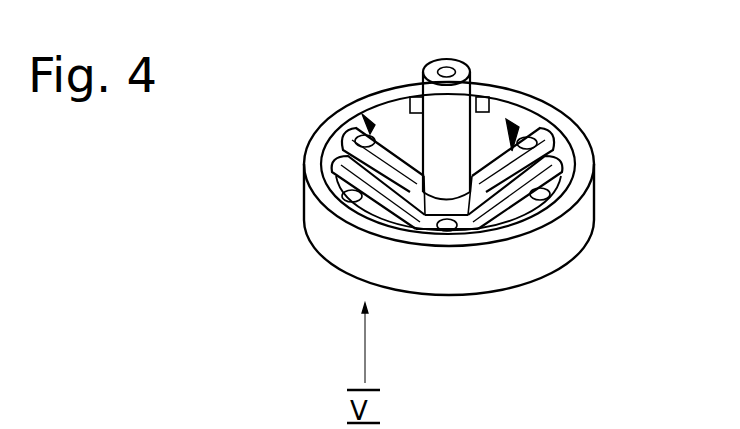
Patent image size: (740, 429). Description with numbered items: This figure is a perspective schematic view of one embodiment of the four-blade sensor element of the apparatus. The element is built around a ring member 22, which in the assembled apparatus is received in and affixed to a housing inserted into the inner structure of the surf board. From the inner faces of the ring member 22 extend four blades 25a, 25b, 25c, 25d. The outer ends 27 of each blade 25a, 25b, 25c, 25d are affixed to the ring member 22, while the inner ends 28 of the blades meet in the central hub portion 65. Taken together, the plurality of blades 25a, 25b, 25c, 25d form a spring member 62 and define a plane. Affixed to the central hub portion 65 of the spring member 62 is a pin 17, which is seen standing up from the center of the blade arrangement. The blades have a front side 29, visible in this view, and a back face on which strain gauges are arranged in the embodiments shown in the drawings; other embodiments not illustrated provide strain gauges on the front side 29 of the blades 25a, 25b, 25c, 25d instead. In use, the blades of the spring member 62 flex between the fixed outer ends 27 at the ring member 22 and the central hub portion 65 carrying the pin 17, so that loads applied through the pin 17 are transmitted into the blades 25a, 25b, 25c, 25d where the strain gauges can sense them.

The pin 17 is at (412, 62).
The ring member 22 is at (577, 217).
The blade 25a is at (390, 107).
The blade 25b is at (493, 157).
The blade 25c is at (508, 250).
The blade 25d is at (335, 228).
The outer ends 27 is at (345, 126).
The inner ends 28 is at (400, 80).
The front side 29 is at (420, 250).
The spring member 62 is at (357, 137).
The central hub portion 65 is at (404, 187).